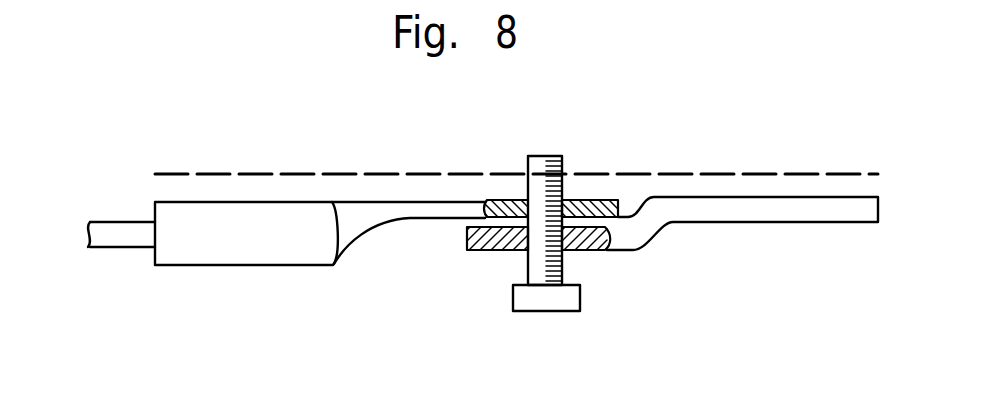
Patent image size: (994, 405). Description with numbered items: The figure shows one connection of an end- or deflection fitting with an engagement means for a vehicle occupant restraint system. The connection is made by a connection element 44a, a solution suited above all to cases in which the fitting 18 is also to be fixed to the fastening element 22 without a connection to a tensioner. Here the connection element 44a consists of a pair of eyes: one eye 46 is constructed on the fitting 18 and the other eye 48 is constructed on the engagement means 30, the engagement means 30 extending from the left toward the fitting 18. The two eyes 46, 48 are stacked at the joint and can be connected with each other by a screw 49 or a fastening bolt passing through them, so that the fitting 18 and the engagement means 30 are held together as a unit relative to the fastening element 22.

The fastening element 22 is at (367, 156).
The engagement means 30 is at (121, 236).
The fitting 18 is at (775, 210).
The eye 46 is at (584, 199).
The eye 48 is at (583, 251).
The connection element 44a is at (456, 276).
The screw 49 is at (559, 299).